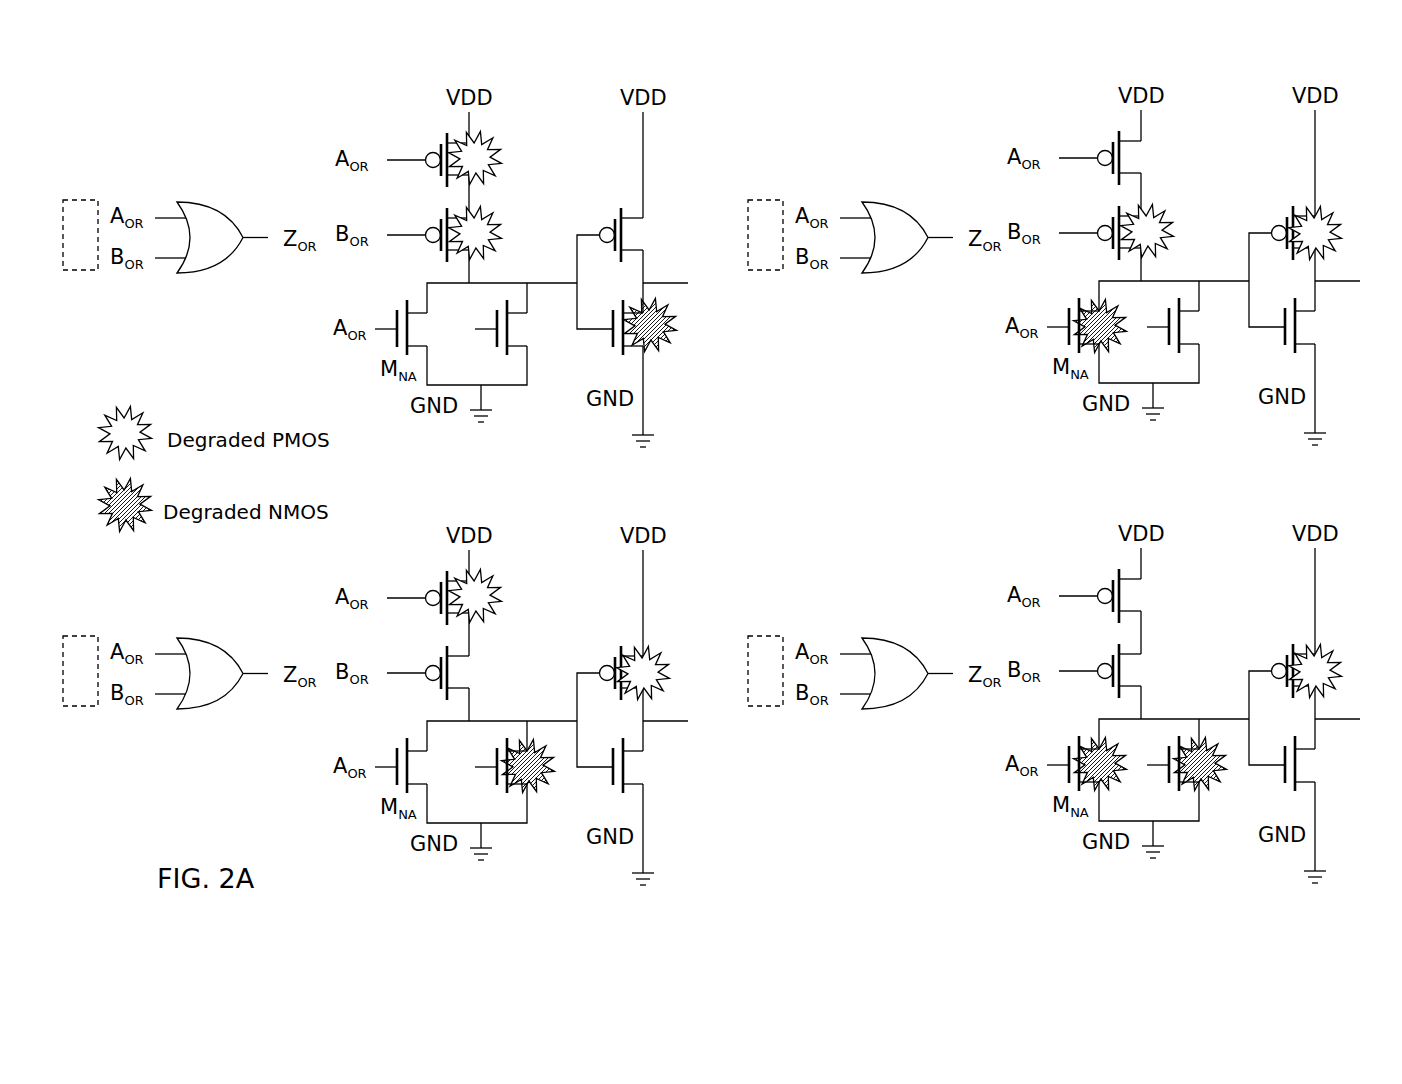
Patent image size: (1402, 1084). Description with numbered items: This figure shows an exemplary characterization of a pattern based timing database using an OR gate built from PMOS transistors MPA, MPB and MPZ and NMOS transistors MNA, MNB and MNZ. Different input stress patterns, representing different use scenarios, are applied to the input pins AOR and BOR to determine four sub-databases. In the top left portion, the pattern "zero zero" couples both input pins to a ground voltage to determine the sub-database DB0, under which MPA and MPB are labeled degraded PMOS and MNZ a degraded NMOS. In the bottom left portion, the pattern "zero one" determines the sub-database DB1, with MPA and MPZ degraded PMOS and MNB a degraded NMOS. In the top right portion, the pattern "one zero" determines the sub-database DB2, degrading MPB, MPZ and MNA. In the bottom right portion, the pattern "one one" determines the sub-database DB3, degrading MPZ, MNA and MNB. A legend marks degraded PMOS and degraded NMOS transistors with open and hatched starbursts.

The sub-database DB0 is at (568, 474).
The sub-database DB1 is at (398, 716).
The sub-database DB2 is at (1075, 279).
The sub-database DB3 is at (1075, 715).